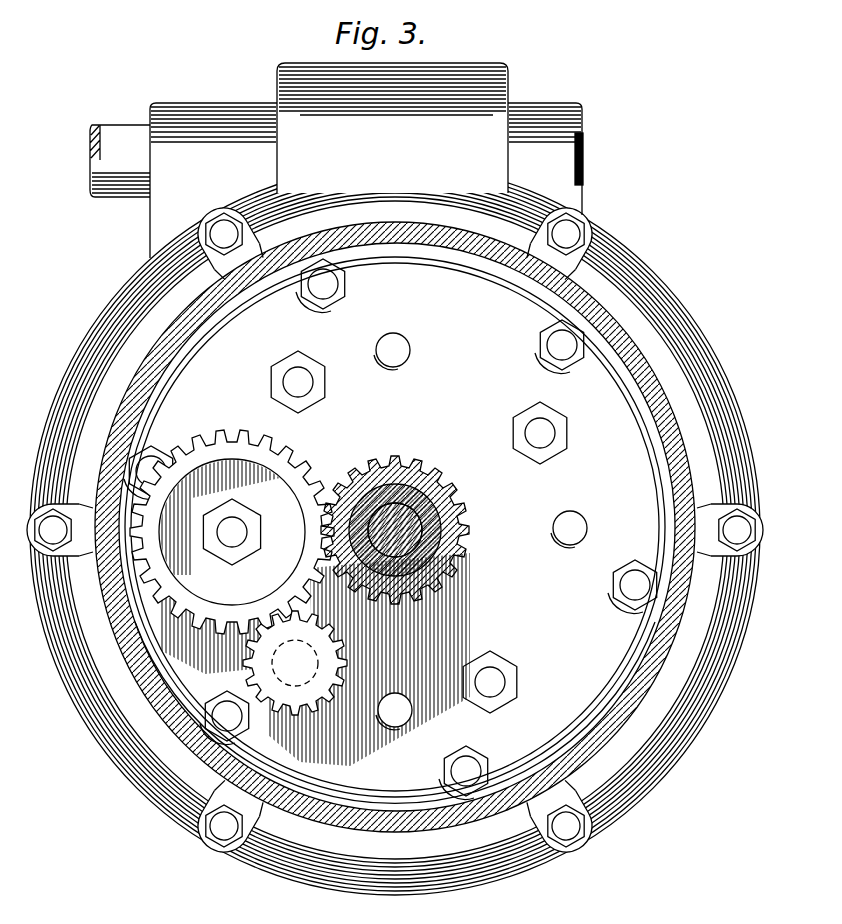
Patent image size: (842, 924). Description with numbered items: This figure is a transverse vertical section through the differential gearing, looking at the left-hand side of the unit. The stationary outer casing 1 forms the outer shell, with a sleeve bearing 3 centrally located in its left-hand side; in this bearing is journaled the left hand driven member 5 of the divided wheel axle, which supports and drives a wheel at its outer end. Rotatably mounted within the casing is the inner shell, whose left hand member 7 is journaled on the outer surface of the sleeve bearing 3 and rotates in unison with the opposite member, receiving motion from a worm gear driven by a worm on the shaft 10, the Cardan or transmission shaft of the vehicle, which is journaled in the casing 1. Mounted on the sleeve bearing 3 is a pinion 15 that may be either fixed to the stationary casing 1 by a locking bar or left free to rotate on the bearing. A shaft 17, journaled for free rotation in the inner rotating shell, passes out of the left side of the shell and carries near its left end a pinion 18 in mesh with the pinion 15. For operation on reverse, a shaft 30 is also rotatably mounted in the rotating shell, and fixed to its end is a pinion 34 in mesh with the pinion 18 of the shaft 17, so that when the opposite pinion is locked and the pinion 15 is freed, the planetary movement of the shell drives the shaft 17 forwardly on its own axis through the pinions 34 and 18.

The stationary outer casing 1 is at (688, 328).
The sleeve bearing 3 is at (438, 543).
The left hand driven member 5 is at (418, 525).
The left hand inner shell member 7 is at (394, 530).
The shaft 10 is at (118, 140).
The pinion 15 is at (417, 460).
The shaft 17 is at (233, 531).
The pinion 18 is at (291, 468).
The shaft 30 is at (313, 647).
The pinion 34 is at (333, 668).